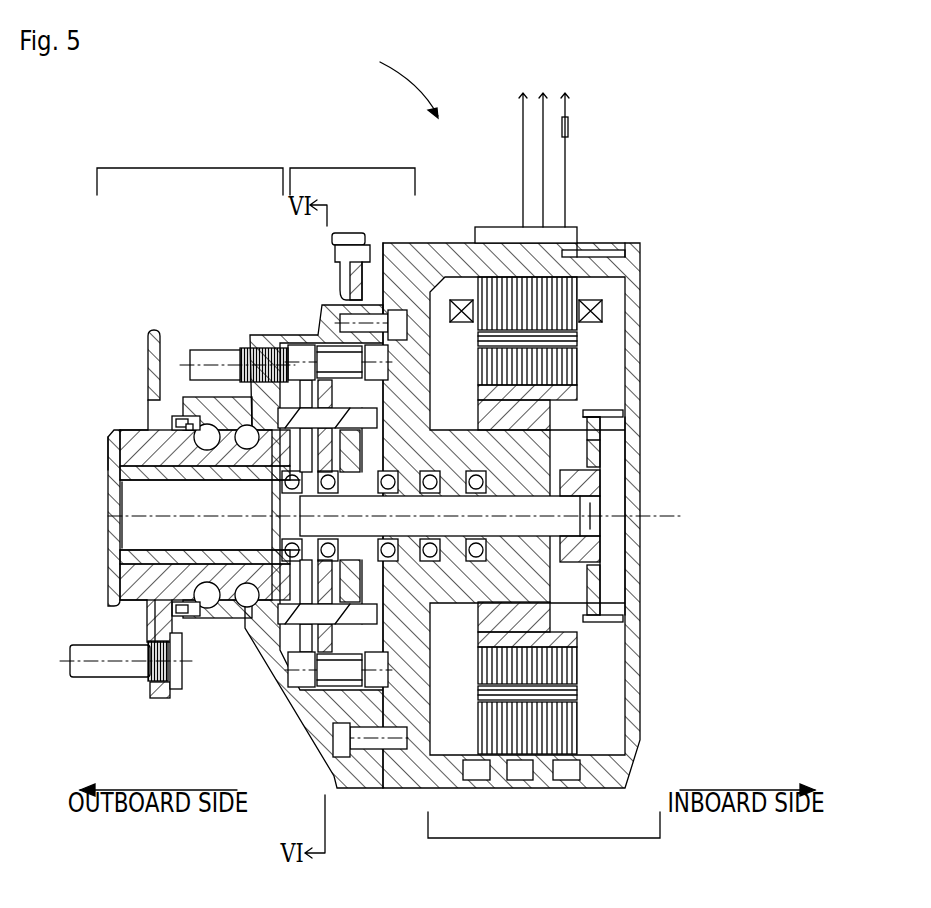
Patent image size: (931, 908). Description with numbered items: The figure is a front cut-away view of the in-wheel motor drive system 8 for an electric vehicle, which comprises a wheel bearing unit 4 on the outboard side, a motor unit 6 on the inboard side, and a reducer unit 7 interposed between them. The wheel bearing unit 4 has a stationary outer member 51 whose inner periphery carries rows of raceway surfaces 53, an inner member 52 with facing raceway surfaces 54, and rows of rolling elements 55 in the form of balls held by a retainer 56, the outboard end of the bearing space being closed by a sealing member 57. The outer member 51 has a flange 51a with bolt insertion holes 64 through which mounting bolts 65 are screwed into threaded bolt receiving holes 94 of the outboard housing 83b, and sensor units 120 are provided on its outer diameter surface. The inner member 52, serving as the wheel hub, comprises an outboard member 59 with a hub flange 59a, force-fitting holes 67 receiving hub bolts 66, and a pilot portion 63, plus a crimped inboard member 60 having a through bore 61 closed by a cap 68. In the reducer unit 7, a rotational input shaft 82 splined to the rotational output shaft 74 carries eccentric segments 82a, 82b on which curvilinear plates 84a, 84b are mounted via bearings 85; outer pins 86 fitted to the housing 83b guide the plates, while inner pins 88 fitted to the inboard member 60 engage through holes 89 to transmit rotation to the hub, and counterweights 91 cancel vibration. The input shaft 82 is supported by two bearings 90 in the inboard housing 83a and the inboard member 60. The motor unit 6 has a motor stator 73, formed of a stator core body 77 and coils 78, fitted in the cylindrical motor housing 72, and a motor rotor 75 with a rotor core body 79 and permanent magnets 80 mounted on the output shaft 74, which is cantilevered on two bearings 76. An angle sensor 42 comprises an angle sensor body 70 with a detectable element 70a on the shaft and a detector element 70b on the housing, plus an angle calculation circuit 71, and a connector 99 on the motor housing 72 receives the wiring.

The wheel bearing unit 4 is at (190, 165).
The motor unit 6 is at (544, 840).
The reducer unit 7 is at (352, 165).
The in-wheel motor drive system 8 is at (402, 79).
The angle sensor 42 is at (733, 392).
The outer member 51 is at (174, 402).
The flange 51a is at (222, 350).
The inner member 52 is at (78, 446).
The raceway surfaces 53 is at (210, 608).
The raceway surfaces 54 is at (208, 566).
The rolling elements 55 is at (205, 450).
The retainer 56 is at (160, 620).
The sealing member 57 is at (150, 604).
The outboard member 59 is at (112, 458).
The hub flange 59a is at (155, 330).
The inboard member 60 is at (112, 484).
The through bore 61 is at (150, 541).
The pilot portion 63 is at (110, 434).
The bolt insertion holes 64 is at (196, 416).
The mounting bolts 65 is at (186, 418).
The hub bolts 66 is at (104, 662).
The force-fitting holes 67 is at (154, 672).
The cap 68 is at (125, 552).
The angle sensor body 70 is at (698, 345).
The detectable element 70a is at (597, 455).
The detector element 70b is at (595, 412).
The angle calculation circuit 71 is at (570, 128).
The motor housing 72 is at (458, 243).
The motor stator 73 is at (653, 172).
The rotational output shaft 74 is at (592, 553).
The motor rotor 75 is at (474, 392).
The bearings 76 is at (447, 572).
The stator core body 77 is at (594, 243).
The coils 78 is at (614, 243).
The rotor core body 79 is at (486, 358).
The permanent magnets 80 is at (478, 341).
The rotational input shaft 82 is at (550, 597).
The eccentric segment 82a is at (252, 472).
The eccentric segment 82b is at (288, 553).
The inboard housing 83a is at (418, 330).
The outboard housing 83b is at (290, 340).
The curvilinear plate 84a is at (348, 624).
The curvilinear plate 84b is at (332, 620).
The bearings 85 is at (330, 560).
The outer pins 86 is at (340, 282).
The inner pins 88 is at (302, 382).
The through holes 89 is at (345, 320).
The bearings 90 is at (432, 605).
The counterweights 91 is at (425, 600).
The bolt receiving holes 94 is at (241, 348).
The connector 99 is at (500, 226).
The sensor units 120 is at (180, 424).